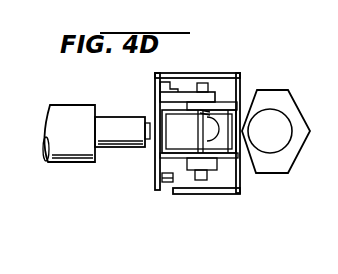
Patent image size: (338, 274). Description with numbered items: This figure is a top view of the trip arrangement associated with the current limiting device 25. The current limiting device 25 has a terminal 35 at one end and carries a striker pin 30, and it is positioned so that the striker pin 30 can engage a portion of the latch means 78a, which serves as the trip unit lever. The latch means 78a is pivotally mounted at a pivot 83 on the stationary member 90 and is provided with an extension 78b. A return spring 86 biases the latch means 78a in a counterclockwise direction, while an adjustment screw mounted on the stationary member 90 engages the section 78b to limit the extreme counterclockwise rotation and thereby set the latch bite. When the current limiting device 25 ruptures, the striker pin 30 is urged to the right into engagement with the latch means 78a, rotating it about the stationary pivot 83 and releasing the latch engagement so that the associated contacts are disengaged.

The current limiting device 25 is at (97, 91).
The striker pin 30 is at (148, 150).
The terminal 35 is at (117, 150).
The latch means 78a is at (179, 96).
The extension 78b is at (155, 188).
The pivot 83 is at (205, 180).
The return spring 86 is at (229, 150).
The stationary member 90 is at (222, 100).